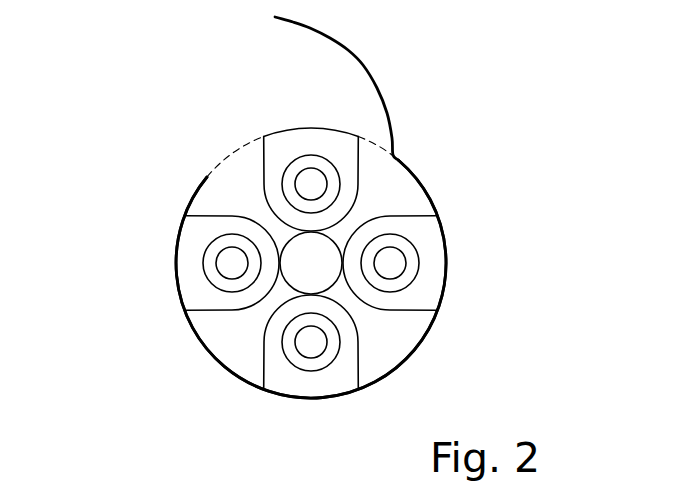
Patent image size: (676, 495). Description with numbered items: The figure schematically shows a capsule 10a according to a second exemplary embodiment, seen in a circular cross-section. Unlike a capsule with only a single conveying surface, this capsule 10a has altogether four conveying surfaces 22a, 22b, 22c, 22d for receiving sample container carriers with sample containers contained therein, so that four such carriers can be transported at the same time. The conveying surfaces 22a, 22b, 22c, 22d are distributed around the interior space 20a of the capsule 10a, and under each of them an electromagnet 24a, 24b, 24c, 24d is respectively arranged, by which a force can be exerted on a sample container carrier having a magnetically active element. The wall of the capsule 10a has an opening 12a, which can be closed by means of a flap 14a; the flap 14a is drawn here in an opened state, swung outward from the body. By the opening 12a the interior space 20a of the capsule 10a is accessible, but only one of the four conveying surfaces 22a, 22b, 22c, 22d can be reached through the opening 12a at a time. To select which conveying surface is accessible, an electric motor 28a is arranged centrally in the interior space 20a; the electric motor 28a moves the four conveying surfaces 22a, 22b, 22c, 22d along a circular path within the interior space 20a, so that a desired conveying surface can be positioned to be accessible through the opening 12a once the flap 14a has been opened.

The capsule 10a is at (417, 213).
The opening 12a is at (245, 150).
The flap 14a is at (365, 60).
The interior space 20a is at (397, 347).
The conveying surface 22a is at (338, 158).
The conveying surface 22b is at (412, 297).
The conveying surface 22c is at (327, 378).
The conveying surface 22d is at (195, 270).
The electromagnet 24a is at (333, 184).
The electromagnet 24b is at (411, 265).
The electromagnet 24c is at (295, 360).
The electromagnet 24d is at (213, 252).
The electric motor 28a is at (298, 278).